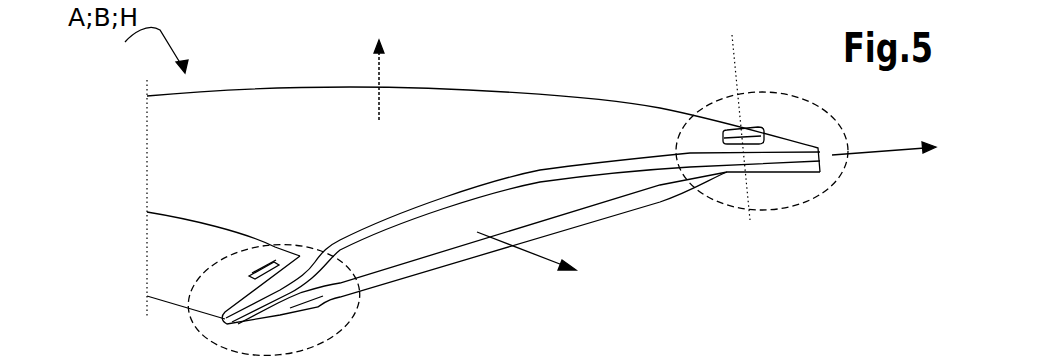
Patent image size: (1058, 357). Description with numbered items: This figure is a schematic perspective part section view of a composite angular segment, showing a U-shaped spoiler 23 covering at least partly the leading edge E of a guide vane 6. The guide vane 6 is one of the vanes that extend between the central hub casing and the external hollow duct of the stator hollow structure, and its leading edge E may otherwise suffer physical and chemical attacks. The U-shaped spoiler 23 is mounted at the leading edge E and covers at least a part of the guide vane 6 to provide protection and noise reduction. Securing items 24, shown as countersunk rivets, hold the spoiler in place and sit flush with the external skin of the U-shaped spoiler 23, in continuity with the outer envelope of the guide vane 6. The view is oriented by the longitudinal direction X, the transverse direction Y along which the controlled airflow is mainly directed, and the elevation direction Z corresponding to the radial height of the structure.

The guide vane 6 is at (272, 100).
The U-shaped spoiler 23 is at (160, 248).
The securing item 24 is at (258, 266).
The leading edge E is at (795, 100).
The longitudinal direction X is at (545, 261).
The transverse direction Y is at (882, 153).
The elevation direction Z is at (380, 70).